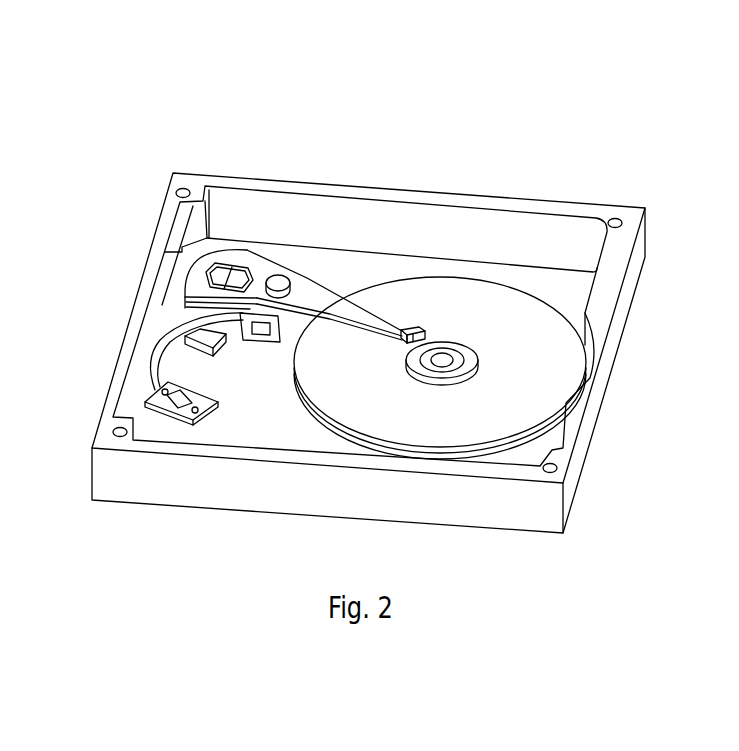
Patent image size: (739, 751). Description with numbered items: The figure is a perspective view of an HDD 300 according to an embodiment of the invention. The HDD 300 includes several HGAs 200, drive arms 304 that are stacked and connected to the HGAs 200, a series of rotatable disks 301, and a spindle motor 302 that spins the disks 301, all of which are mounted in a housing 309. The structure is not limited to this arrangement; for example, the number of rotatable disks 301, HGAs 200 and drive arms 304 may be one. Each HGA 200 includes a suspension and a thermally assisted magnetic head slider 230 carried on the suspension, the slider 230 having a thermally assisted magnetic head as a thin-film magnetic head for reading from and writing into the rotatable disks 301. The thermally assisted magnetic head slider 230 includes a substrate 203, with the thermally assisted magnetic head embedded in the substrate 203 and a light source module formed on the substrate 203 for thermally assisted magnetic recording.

The HDD 300 is at (83, 56).
The housing 309 is at (585, 243).
The rotatable disk 301 is at (510, 310).
The spindle motor 302 is at (442, 362).
The drive arm 304 is at (298, 287).
The HGA 200 is at (357, 318).
The thermally assisted magnetic head slider 230 is at (400, 332).
The substrate 203 is at (413, 336).